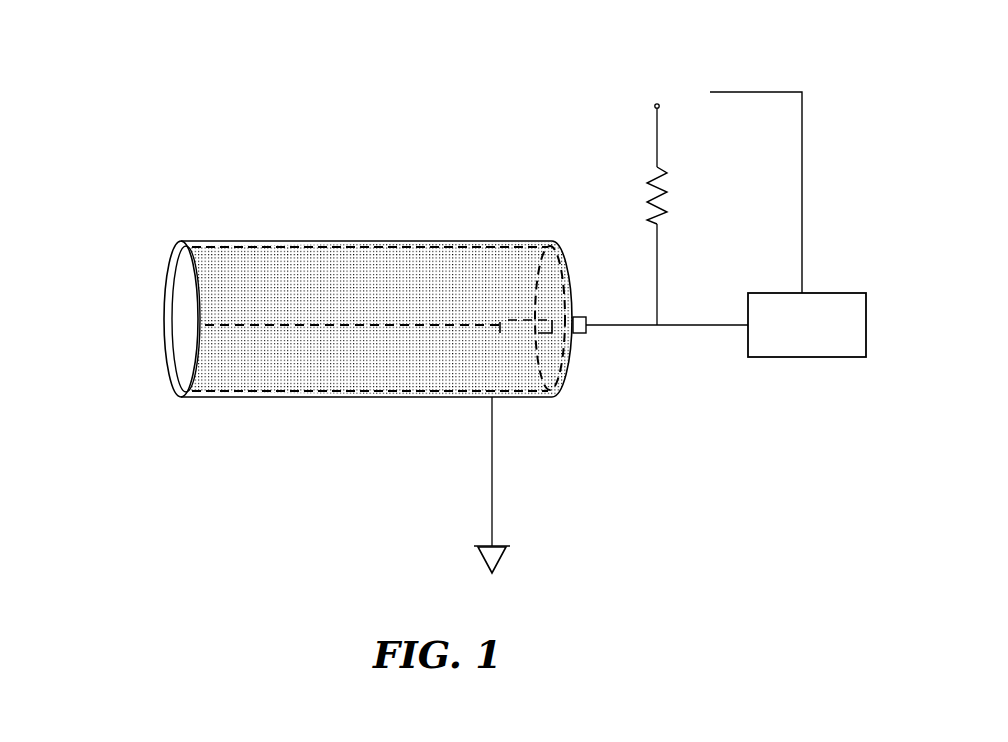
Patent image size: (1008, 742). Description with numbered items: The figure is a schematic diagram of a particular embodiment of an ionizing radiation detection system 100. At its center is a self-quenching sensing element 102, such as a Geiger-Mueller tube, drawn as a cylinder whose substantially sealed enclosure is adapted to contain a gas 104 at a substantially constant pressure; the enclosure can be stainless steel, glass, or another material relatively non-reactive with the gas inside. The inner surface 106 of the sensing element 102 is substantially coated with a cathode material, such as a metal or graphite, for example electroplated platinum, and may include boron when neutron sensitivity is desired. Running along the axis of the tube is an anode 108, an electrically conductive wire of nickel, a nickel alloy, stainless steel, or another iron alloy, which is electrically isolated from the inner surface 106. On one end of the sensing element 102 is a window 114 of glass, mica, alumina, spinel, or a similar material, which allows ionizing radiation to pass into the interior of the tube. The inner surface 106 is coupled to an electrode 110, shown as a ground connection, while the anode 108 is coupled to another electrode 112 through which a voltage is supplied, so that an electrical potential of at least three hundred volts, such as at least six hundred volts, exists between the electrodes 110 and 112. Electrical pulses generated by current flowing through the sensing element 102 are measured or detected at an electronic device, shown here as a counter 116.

The ionizing radiation detection system 100 is at (90, 203).
The self-quenching sensing element 102 is at (342, 241).
The gas 104 is at (283, 298).
The inner surface 106 is at (376, 390).
The anode 108 is at (415, 322).
The electrode 110 is at (480, 540).
The electrode 112 is at (620, 72).
The window 114 is at (182, 317).
The counter 116 is at (787, 293).